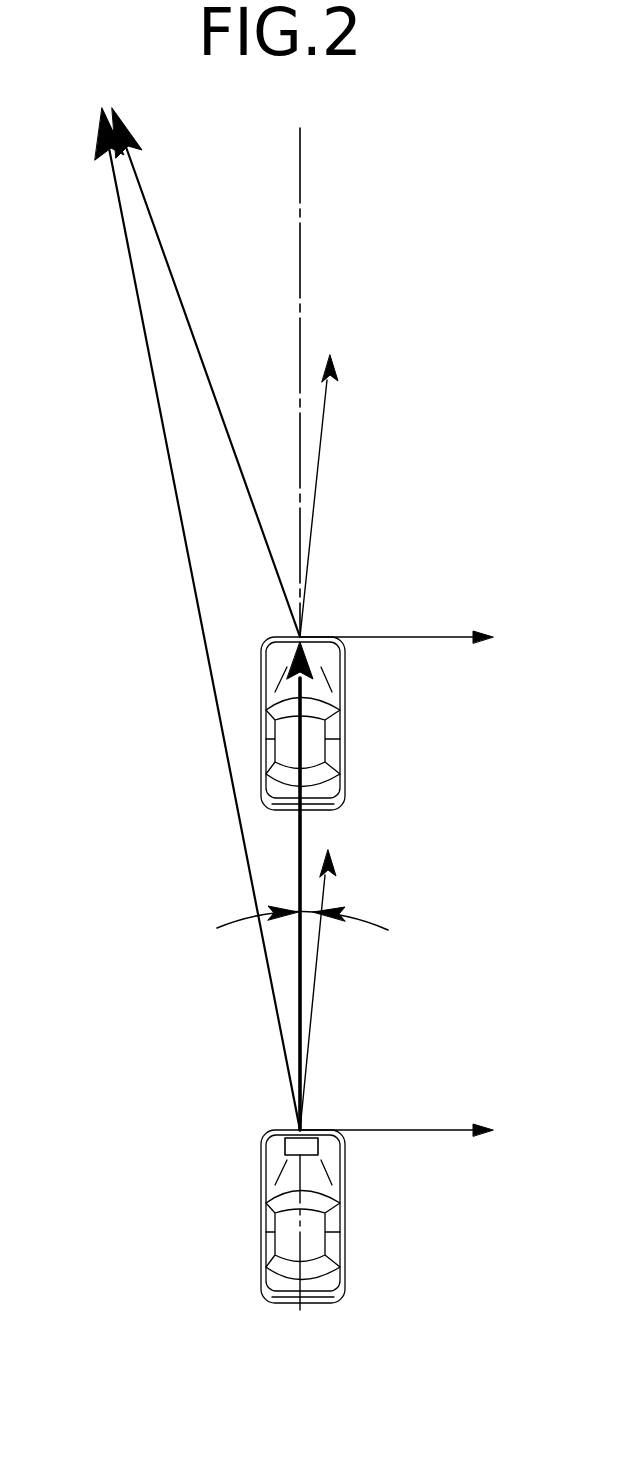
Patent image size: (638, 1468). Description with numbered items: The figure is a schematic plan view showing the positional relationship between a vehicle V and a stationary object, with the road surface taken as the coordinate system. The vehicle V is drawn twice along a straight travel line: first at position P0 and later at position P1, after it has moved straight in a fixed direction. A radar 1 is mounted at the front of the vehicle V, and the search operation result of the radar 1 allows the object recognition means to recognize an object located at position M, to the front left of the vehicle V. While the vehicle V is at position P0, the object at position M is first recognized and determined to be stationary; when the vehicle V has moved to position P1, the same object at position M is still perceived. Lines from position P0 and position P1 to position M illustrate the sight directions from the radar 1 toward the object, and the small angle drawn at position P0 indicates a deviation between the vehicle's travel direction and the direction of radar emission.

The radar 1 is at (293, 1147).
The vehicle V is at (268, 1245).
The position of the stationary object M is at (172, 616).
The first vehicle position P0 is at (396, 1159).
The second vehicle position P1 is at (377, 720).